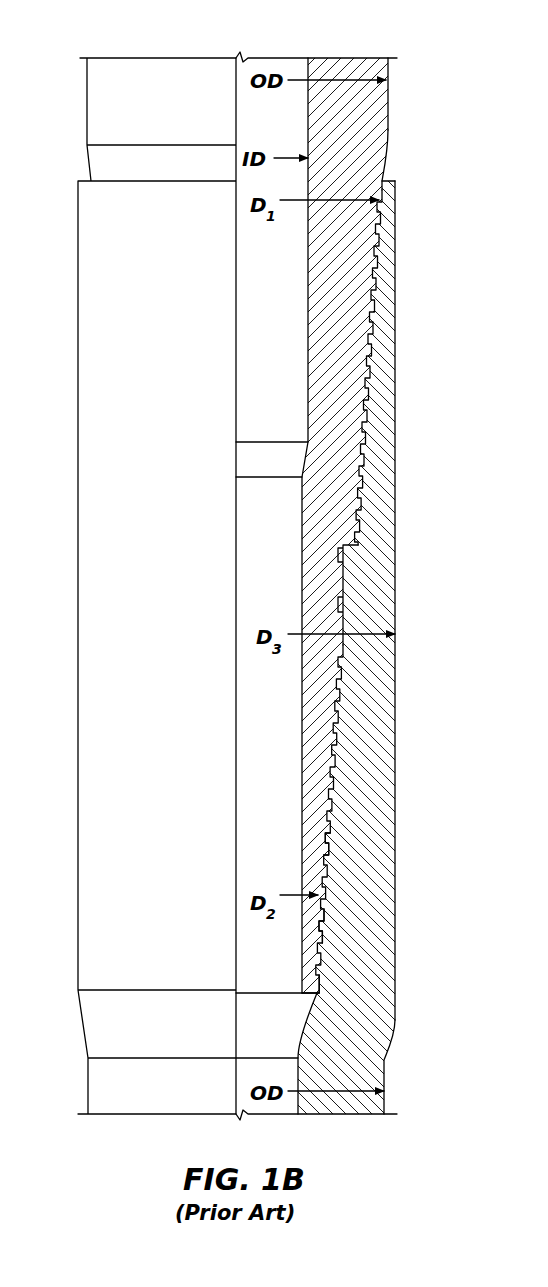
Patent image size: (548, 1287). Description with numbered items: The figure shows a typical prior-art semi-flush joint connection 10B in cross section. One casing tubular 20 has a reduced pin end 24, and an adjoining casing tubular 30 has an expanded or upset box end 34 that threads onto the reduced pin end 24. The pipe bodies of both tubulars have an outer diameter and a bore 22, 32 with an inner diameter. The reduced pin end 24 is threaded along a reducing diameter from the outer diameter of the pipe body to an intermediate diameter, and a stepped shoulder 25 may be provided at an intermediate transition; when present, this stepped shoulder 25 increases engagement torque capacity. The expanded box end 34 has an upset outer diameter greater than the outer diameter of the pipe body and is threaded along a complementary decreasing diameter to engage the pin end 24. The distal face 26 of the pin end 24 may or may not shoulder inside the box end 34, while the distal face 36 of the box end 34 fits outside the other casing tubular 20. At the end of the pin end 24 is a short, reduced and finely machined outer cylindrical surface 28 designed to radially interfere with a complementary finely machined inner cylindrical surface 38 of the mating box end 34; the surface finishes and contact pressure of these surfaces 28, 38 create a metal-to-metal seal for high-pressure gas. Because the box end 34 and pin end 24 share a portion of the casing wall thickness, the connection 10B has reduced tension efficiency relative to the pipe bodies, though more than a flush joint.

The semi-flush joint connection 10B is at (52, 72).
The casing tubular 20 is at (390, 86).
The bore 22 is at (308, 131).
The reduced pin end 24 is at (328, 818).
The stepped shoulder 25 is at (350, 547).
The distal face of the pin end 26 is at (272, 996).
The reduced OD cylindrical surface 28 is at (324, 890).
The adjoining casing tubular 30 is at (397, 326).
The bore 32 is at (308, 1021).
The expanded box end 34 is at (366, 395).
The distal face of the box end 36 is at (397, 188).
The ID cylindrical surface 38 is at (316, 932).